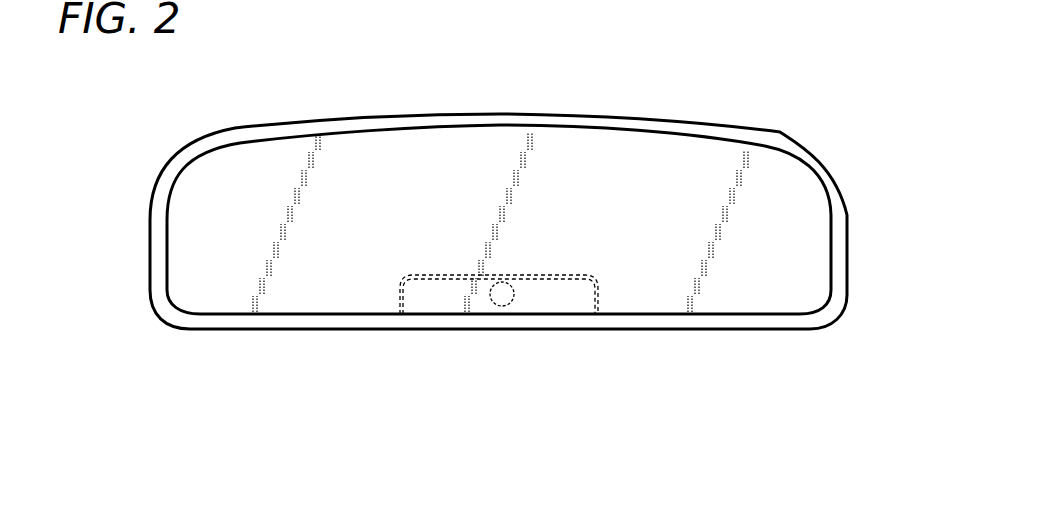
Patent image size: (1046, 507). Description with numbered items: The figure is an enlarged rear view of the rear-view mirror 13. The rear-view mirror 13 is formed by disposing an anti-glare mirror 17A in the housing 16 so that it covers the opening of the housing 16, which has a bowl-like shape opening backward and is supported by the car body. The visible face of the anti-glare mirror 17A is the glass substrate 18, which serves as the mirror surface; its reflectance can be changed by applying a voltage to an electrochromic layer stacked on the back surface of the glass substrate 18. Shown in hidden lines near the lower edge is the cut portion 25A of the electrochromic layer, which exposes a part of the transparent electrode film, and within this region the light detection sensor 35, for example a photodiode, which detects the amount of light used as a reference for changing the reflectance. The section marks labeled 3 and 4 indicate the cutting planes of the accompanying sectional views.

The rear-view mirror 13 is at (656, 118).
The housing 16 is at (768, 132).
The glass substrate 18 is at (236, 183).
The anti-glare mirror 17A is at (367, 222).
The cut portion 25A is at (590, 282).
The light detection sensor 35 is at (490, 304).
The section line 3- 3 is at (568, 73).
The section line 4- 4 is at (502, 100).